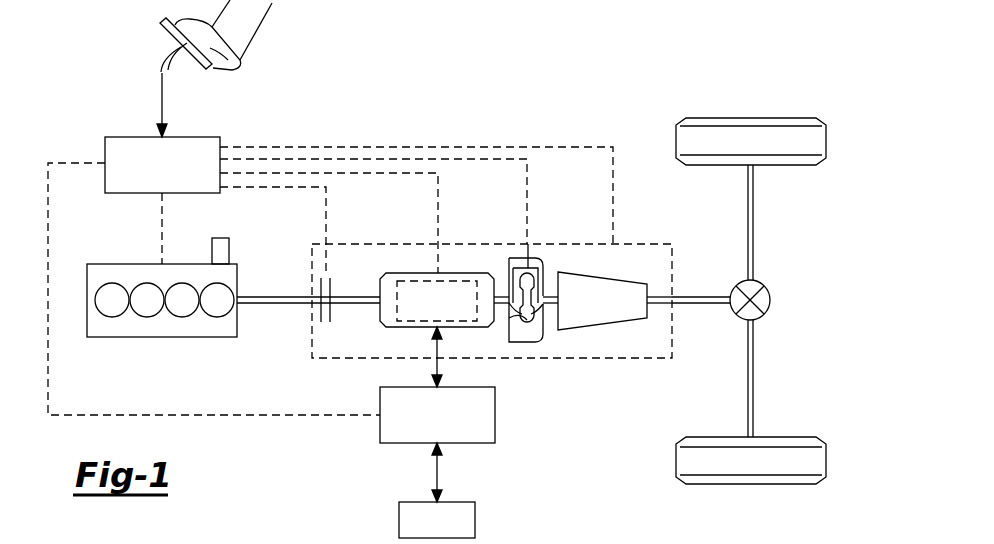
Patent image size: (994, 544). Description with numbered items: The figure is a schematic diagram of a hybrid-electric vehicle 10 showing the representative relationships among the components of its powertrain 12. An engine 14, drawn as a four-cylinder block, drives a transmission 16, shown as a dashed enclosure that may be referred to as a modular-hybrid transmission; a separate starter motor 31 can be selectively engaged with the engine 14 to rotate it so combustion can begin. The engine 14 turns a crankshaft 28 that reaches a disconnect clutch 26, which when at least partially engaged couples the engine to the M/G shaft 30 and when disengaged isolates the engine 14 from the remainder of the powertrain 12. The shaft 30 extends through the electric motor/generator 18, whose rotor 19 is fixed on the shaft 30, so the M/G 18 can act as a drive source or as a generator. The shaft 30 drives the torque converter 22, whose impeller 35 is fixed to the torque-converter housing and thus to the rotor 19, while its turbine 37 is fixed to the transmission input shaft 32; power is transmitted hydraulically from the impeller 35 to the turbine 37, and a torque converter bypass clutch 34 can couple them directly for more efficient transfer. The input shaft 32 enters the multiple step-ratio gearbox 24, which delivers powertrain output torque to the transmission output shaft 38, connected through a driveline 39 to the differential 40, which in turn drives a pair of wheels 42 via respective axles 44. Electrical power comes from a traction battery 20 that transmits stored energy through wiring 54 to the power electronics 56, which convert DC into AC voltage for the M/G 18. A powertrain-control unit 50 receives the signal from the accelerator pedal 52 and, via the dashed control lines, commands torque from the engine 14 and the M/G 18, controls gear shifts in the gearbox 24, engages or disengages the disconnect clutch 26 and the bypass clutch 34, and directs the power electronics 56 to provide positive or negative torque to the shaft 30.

The hybrid-electric vehicle 10 is at (630, 58).
The powertrain 12 is at (266, 452).
The engine 14 is at (103, 264).
The transmission 16 is at (468, 243).
The electric motor/generator 18 is at (415, 273).
The rotor 19 is at (409, 322).
The traction battery 20 is at (399, 520).
The torque converter 22 is at (520, 343).
The gearbox 24 is at (597, 331).
The disconnect clutch 26 is at (322, 322).
The crankshaft 28 is at (293, 296).
The M/G shaft 30 is at (357, 296).
The starter motor 31 is at (229, 251).
The transmission input shaft 32 is at (549, 296).
The torque converter bypass clutch 34 is at (528, 250).
The impeller 35 is at (543, 312).
The turbine 37 is at (513, 316).
The transmission output shaft 38 is at (660, 296).
The driveline 39 is at (700, 296).
The differential 40 is at (771, 300).
The wheels 42 is at (720, 118).
The axles 44 is at (755, 225).
The powertrain-control unit 50 is at (117, 137).
The accelerator pedal 52 is at (160, 35).
The wiring 54 is at (435, 474).
The power electronics 56 is at (495, 413).